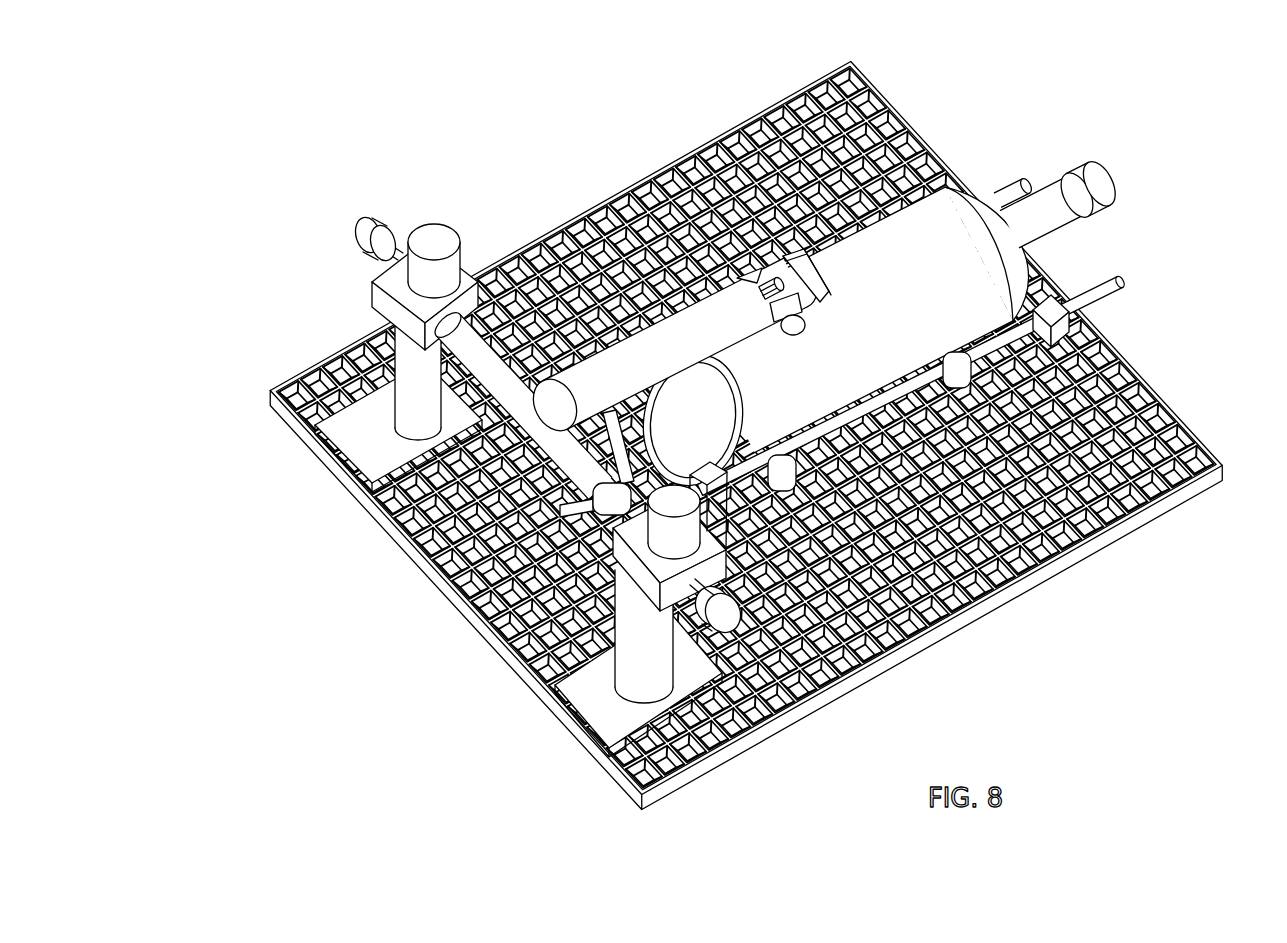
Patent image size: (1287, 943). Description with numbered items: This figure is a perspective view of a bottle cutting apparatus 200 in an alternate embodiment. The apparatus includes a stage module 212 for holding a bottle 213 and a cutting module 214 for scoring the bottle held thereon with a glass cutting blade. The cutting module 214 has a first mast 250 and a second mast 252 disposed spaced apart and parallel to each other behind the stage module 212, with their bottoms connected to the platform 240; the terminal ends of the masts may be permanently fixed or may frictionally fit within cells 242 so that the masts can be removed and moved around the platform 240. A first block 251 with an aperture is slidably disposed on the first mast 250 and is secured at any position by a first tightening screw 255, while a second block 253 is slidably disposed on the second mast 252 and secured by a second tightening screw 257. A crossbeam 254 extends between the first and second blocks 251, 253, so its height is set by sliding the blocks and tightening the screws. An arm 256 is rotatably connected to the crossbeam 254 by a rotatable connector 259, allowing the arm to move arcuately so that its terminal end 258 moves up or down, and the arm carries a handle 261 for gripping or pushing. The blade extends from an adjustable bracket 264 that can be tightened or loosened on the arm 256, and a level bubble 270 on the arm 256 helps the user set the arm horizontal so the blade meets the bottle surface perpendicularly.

The bottle cutting apparatus 200 is at (251, 179).
The stage module 212 is at (775, 436).
The bottle 213 is at (983, 280).
The cutting module 214 is at (272, 333).
The platform 240 is at (955, 608).
The cells 242 is at (846, 612).
The first mast 250 is at (603, 733).
The first block 251 is at (627, 568).
The second mast 252 is at (394, 402).
The second block 253 is at (373, 292).
The crossbeam 254 is at (616, 511).
The first tightening screw 255 is at (740, 625).
The arm 256 is at (668, 332).
The second tightening screw 257 is at (370, 218).
The terminal end 258 is at (829, 292).
The rotatable connector 259 is at (492, 360).
The handle 261 is at (582, 378).
The adjustable bracket 264 is at (800, 334).
The level bubble 270 is at (816, 285).